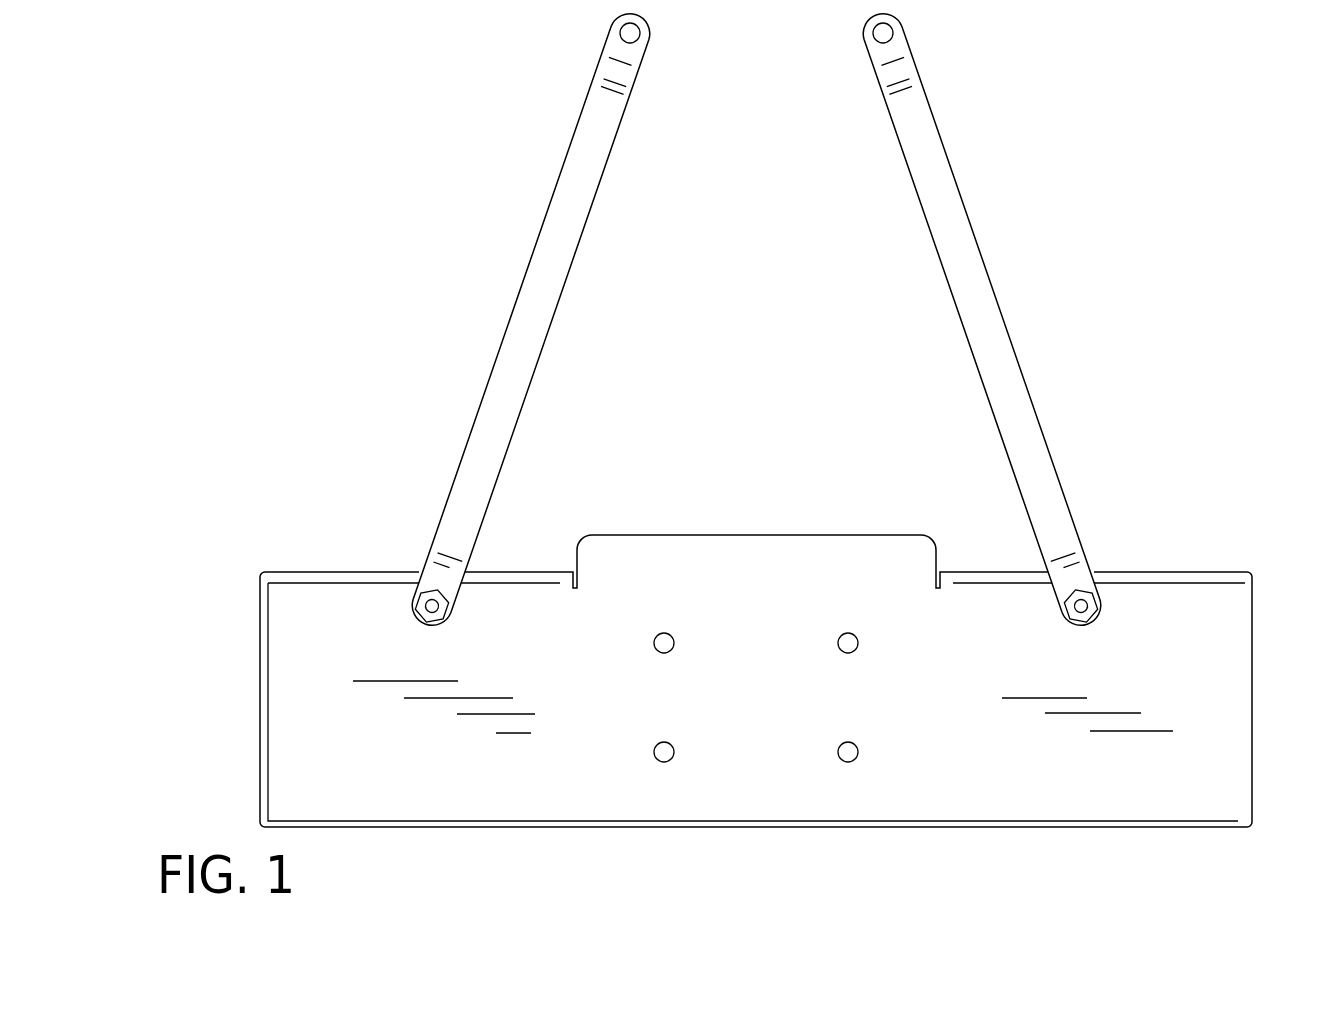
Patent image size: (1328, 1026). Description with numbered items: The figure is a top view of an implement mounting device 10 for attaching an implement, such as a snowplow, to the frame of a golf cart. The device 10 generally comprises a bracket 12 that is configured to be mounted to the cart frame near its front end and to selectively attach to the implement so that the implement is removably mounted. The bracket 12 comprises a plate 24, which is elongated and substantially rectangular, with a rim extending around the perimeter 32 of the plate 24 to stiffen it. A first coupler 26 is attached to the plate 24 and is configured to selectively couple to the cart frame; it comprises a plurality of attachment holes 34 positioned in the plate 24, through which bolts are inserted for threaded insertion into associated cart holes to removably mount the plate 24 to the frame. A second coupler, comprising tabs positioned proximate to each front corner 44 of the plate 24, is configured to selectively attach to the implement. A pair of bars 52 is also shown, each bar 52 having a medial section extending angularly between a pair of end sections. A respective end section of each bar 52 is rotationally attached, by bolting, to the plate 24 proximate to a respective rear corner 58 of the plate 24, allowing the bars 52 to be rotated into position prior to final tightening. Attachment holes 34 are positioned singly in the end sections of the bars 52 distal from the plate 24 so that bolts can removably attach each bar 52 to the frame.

The implement mounting device 10 is at (1090, 226).
The bracket 12 is at (1255, 661).
The plate 24 is at (1195, 744).
The first coupler 26 is at (840, 743).
The perimeter 32 is at (257, 680).
The attachment holes 34 is at (878, 44).
The front corner 44 is at (1255, 831).
The bars 52 is at (545, 353).
The rear corner 58 is at (1252, 568).